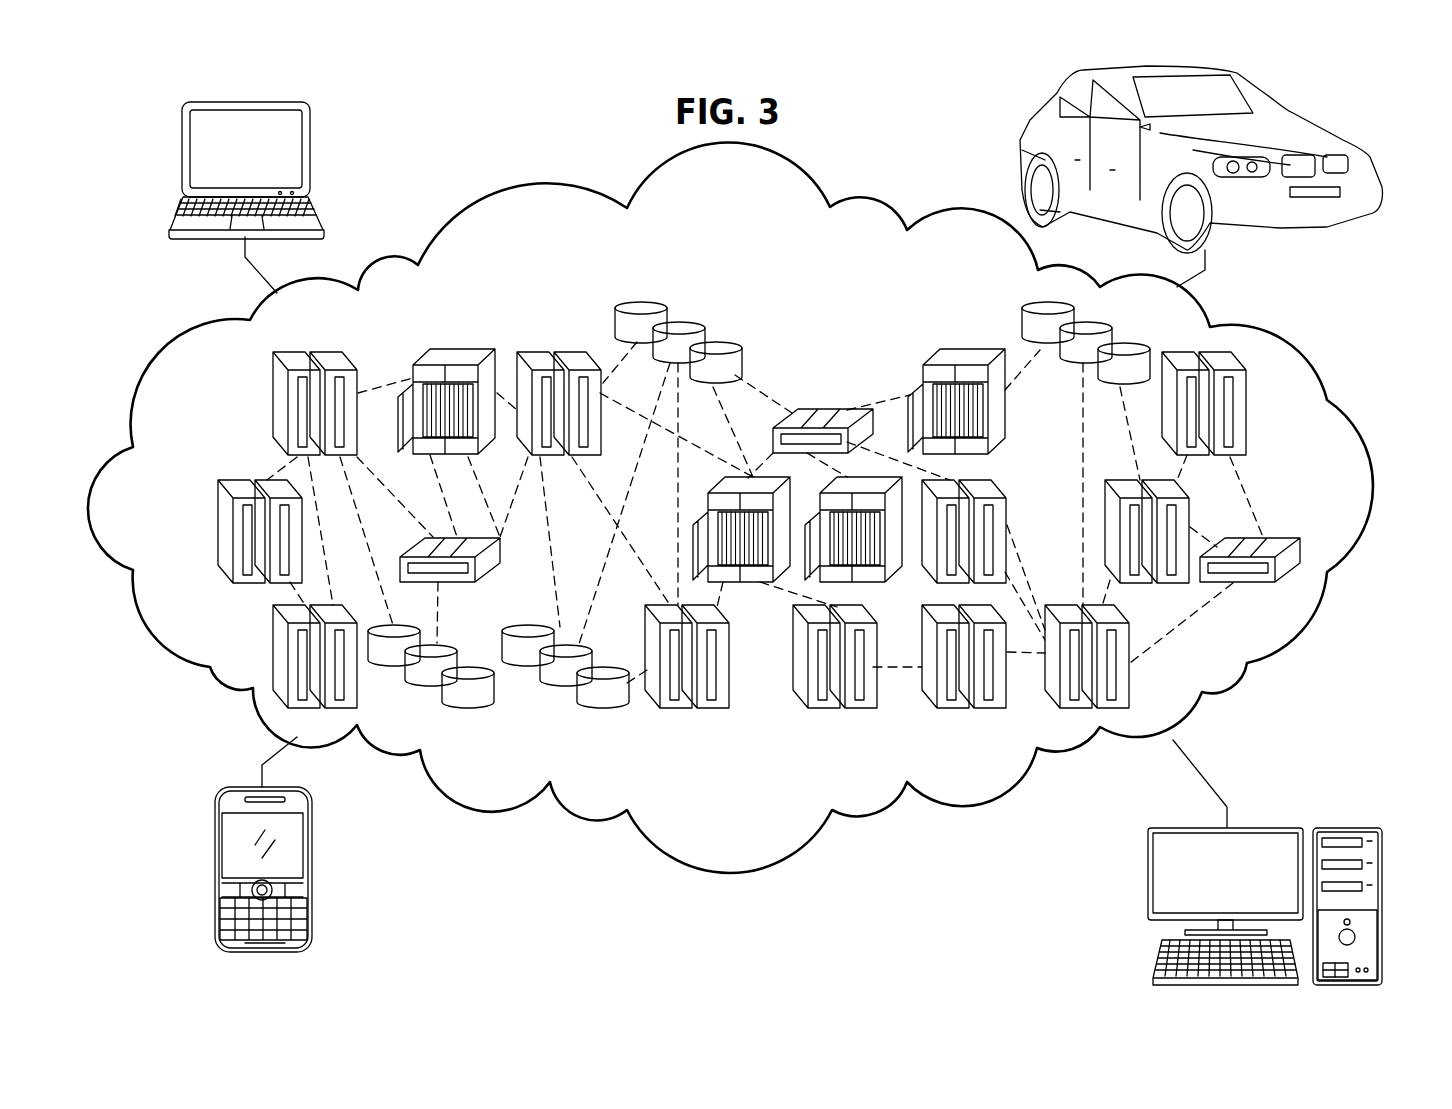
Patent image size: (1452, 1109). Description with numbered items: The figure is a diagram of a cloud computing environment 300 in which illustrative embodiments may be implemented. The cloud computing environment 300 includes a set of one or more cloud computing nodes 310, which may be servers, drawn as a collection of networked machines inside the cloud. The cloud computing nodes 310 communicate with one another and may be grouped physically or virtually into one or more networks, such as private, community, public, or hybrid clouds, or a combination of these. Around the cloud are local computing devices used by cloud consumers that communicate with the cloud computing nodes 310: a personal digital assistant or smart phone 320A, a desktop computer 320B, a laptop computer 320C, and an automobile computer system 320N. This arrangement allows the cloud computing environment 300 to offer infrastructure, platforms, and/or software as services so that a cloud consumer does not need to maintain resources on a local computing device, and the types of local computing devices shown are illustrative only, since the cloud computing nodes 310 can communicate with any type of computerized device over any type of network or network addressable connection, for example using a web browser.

The cloud computing environment 300 is at (898, 832).
The cloud computing nodes 310 is at (673, 863).
The personal digital assistant or smart phone 320A is at (213, 868).
The desktop computer 320B is at (1272, 825).
The laptop computer 320C is at (345, 133).
The automobile computer system 320N is at (1343, 240).